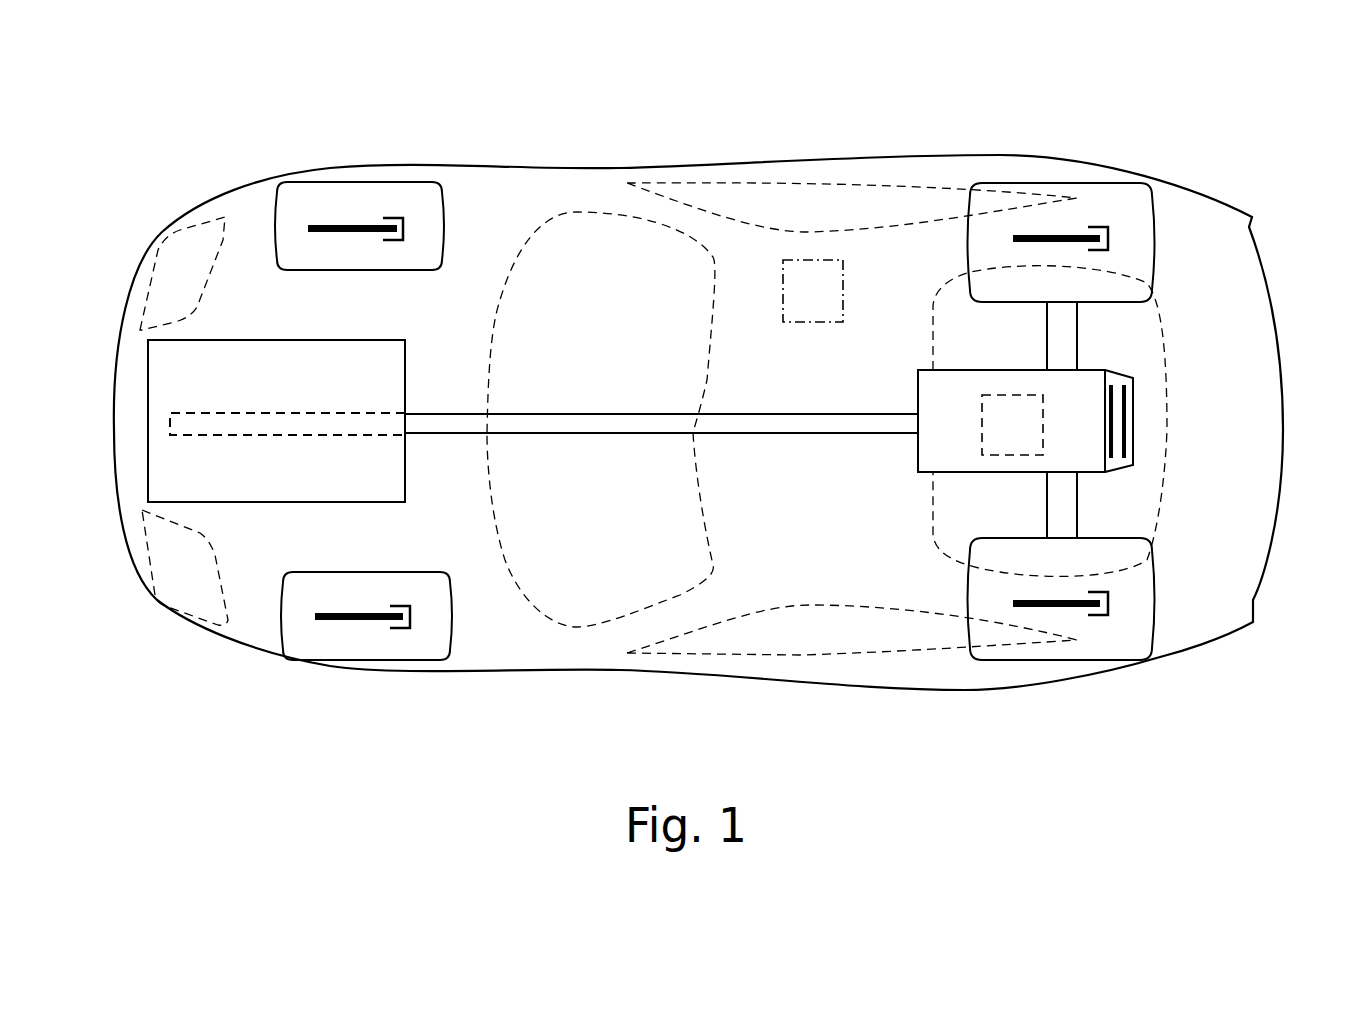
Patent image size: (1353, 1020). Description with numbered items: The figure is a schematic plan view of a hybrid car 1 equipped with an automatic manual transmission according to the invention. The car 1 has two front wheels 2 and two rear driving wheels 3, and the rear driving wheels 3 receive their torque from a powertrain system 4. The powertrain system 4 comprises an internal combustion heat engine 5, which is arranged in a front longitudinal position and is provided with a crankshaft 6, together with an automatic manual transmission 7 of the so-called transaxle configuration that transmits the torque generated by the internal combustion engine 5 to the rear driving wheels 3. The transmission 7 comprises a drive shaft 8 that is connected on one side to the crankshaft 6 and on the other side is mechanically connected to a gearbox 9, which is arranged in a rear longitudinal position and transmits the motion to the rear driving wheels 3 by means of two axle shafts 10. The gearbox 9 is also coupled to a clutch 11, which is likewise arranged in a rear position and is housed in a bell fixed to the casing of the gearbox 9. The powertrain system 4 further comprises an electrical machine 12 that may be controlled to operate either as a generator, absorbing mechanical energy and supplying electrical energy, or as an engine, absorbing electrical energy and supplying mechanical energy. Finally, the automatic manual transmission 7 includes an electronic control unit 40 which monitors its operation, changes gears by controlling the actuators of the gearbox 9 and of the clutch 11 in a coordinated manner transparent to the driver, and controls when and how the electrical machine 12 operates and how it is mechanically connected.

The car 1 is at (711, 420).
The front wheels 2 is at (298, 203).
The rear driving wheels 3 is at (1135, 200).
The powertrain system 4 is at (197, 192).
The internal combustion heat engine 5 is at (158, 355).
The crankshaft 6 is at (257, 438).
The automatic manual transmission 7 is at (729, 145).
The drive shaft 8 is at (725, 434).
The gearbox 9 is at (1027, 421).
The axle shafts 10 is at (1065, 342).
The clutch 11 is at (1118, 425).
The electrical machine 12 is at (1012, 425).
The electronic control unit 40 is at (813, 291).